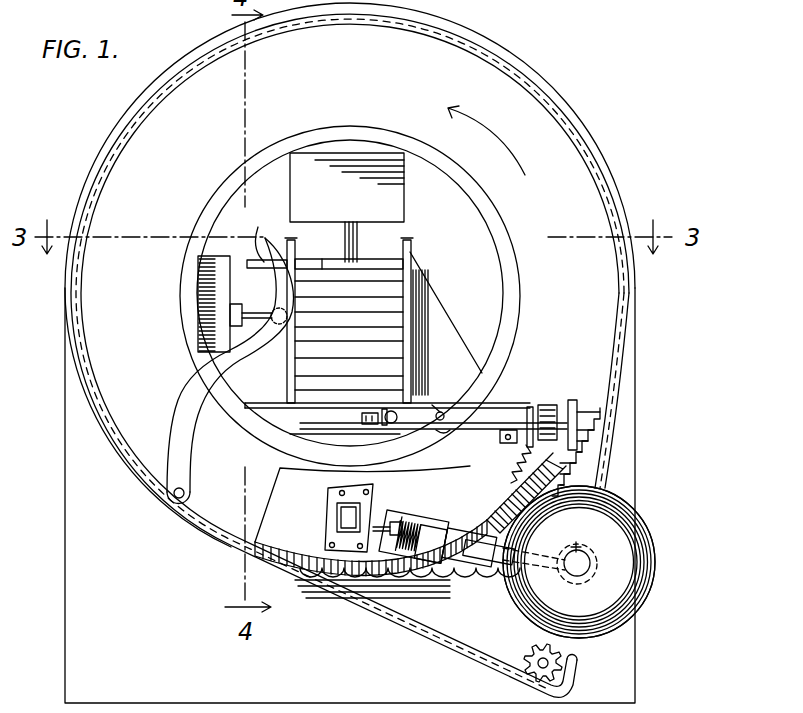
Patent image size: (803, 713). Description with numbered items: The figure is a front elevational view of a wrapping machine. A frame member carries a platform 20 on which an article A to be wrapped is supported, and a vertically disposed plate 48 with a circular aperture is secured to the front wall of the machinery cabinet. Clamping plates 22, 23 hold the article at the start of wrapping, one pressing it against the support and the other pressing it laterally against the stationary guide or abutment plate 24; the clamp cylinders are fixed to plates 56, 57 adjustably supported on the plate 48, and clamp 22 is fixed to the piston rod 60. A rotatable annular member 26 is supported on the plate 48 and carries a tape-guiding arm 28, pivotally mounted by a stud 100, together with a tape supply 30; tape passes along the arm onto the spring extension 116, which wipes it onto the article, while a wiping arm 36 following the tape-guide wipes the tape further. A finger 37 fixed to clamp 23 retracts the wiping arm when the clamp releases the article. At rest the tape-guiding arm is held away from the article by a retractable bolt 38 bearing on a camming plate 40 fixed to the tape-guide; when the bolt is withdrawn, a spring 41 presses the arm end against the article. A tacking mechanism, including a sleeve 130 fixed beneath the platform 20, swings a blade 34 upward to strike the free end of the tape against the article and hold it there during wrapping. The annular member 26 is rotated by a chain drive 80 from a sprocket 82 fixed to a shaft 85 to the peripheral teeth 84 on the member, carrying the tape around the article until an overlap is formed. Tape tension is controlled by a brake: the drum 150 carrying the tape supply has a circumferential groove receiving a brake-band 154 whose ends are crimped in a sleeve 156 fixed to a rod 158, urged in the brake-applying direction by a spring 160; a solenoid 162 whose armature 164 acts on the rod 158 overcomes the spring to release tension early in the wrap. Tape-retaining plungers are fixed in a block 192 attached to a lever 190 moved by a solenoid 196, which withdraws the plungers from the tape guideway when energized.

The platform 20 is at (417, 403).
The clamping plate 22 is at (267, 238).
The clamping plate 23 is at (290, 240).
The stationary guide plate 24 is at (411, 245).
The rotatable annular member 26 is at (565, 167).
The tape-guiding arm 28 is at (593, 390).
The tape supply 30 is at (658, 520).
The blade member 34 is at (397, 425).
The wiping arm 36 is at (202, 372).
The finger 37 is at (278, 340).
The retractable bolt 38 is at (432, 412).
The camming plate 40 is at (436, 431).
The spring 41 is at (509, 470).
The vertically disposed plate 48 is at (80, 605).
The plate 56 is at (401, 190).
The plate 57 is at (213, 272).
The piston rod 60 is at (353, 237).
The chain drive 80 is at (385, 620).
The sprocket 82 is at (560, 670).
The peripheral teeth 84 is at (600, 424).
The shaft 85 is at (540, 660).
The bolt or stud 100 is at (433, 448).
The spring extension 116 is at (325, 430).
The sleeve 130 is at (395, 402).
The coil spring 150 is at (657, 582).
The brake-band 154 is at (560, 548).
The sleeve 156 is at (496, 548).
The rod 158 is at (455, 547).
The spring 160 is at (430, 490).
The solenoid 162 is at (330, 518).
The armature 164 is at (388, 515).
The lever 190 is at (522, 407).
The block 192 is at (372, 426).
The solenoid 196 is at (570, 418).
The article A is at (388, 307).